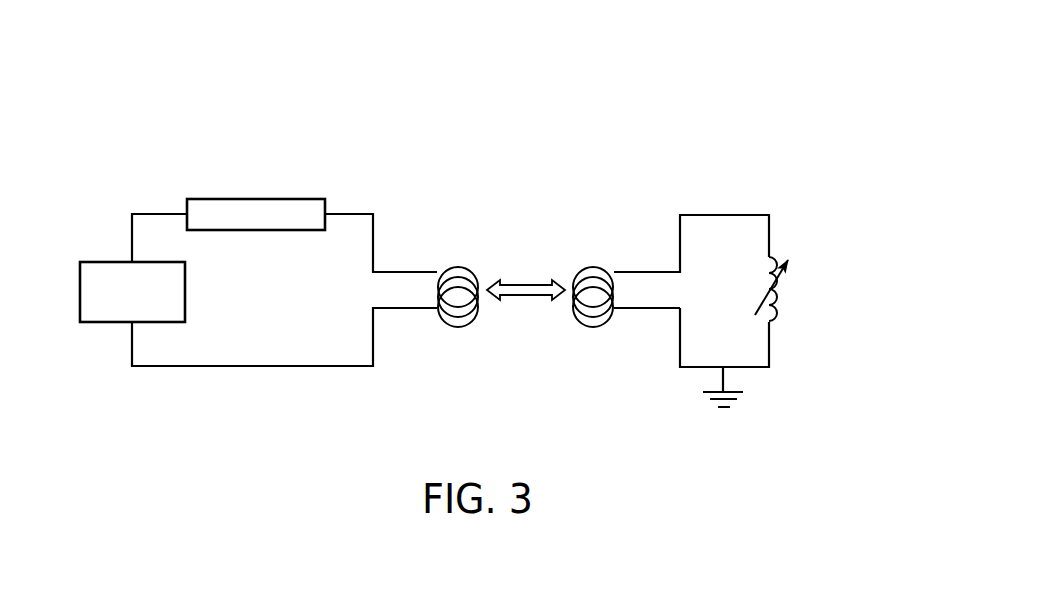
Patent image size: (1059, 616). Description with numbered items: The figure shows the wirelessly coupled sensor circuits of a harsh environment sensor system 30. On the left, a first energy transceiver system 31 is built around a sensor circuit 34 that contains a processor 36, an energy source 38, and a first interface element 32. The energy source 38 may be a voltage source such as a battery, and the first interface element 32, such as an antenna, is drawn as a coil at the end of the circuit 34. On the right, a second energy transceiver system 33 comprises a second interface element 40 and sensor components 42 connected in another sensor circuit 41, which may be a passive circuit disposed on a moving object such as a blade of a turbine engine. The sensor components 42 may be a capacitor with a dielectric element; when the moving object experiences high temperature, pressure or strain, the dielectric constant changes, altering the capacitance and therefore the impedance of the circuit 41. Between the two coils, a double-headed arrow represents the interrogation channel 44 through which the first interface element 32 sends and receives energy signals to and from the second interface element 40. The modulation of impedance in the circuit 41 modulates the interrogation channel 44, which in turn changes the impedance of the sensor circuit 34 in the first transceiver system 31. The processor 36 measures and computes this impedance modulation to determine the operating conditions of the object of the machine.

The harsh environment sensor system 30 is at (700, 50).
The first energy transceiver system 31 is at (145, 188).
The first interface element 32 is at (458, 265).
The second energy transceiver system 33 is at (668, 200).
The sensor circuit 34 is at (253, 367).
The processor 36 is at (255, 198).
The energy source 38 is at (115, 322).
The second interface element 40 is at (593, 328).
The sensor circuit 41 is at (653, 310).
The sensor components 42 is at (785, 245).
The interrogation channel 44 is at (527, 285).